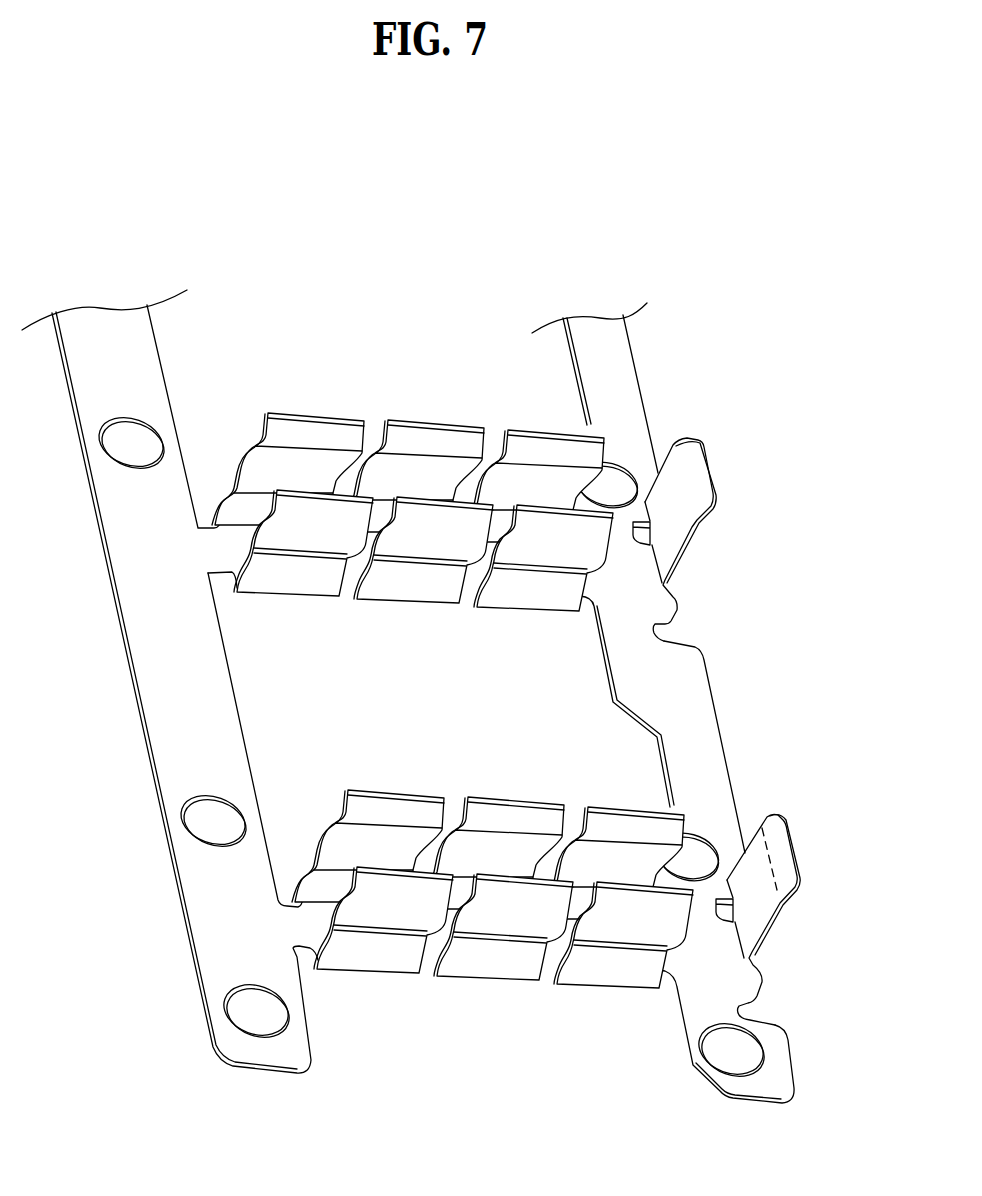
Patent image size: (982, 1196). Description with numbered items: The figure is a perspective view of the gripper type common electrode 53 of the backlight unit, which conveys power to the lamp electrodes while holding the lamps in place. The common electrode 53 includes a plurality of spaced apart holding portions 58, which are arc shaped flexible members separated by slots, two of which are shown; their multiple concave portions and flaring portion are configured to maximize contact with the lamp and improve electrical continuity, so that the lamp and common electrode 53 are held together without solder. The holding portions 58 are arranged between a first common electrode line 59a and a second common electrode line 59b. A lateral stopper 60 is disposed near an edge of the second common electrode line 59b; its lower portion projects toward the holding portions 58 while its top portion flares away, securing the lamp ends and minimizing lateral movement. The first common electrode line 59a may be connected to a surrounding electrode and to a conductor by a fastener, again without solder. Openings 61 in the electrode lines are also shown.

The gripper type common electrode 53 is at (442, 696).
The holding portion 58 is at (488, 963).
The first common electrode line 59a is at (185, 689).
The second common electrode line 59b is at (708, 728).
The lateral stopper 60 is at (782, 853).
The mounting hole 61 is at (242, 1015).